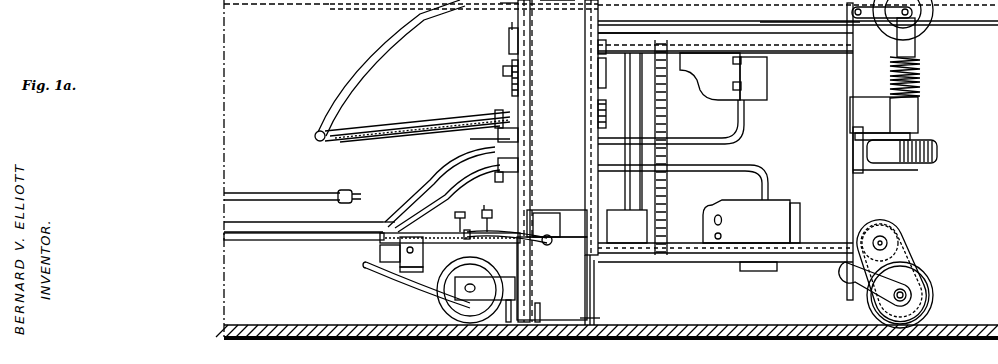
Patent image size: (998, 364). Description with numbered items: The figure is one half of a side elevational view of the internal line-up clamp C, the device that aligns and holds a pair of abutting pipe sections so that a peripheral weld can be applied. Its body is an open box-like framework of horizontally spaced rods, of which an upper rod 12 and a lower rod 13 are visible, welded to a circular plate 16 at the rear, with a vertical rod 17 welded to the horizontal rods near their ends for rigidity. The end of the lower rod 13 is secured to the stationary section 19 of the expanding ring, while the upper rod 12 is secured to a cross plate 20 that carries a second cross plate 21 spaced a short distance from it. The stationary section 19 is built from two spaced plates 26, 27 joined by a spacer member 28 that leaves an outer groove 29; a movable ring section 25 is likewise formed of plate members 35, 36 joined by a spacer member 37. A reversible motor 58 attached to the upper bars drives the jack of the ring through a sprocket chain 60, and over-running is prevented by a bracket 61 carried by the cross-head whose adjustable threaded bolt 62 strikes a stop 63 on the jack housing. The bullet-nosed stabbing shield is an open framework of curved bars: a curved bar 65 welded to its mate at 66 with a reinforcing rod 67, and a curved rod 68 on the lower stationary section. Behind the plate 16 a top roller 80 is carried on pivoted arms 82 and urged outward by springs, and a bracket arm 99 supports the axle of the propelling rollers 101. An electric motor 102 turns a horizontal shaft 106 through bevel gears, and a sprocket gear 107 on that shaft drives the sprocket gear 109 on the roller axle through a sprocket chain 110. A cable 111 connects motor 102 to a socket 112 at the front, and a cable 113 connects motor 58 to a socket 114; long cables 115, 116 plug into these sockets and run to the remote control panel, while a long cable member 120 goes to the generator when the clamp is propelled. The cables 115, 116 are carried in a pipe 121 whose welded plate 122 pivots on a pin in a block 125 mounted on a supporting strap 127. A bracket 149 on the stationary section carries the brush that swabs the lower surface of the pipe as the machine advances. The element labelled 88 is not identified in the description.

The horizontal rod 12 is at (801, 30).
The horizontal rod 13 is at (714, 262).
The circular plate 16 is at (853, 199).
The vertical rod 17 is at (627, 79).
The stationary section of expanding ring 19 is at (606, 293).
The cross plate 20 is at (590, 45).
The second cross plate 21 is at (514, 42).
The ring section 25 is at (557, 5).
The plate of stationary section 26 is at (526, 268).
The plate of stationary section 27 is at (596, 310).
The spacer member 28 is at (566, 291).
The outer groove 29 is at (598, 322).
The plate member 35 is at (510, 4).
The plate member 36 is at (608, 8).
The spacer member 37 is at (576, 25).
The motor 58 is at (764, 96).
The sprocket chain 60 is at (645, 158).
The bracket 61 is at (452, 157).
The threaded bolt 62 is at (492, 210).
The stop 63 is at (463, 210).
The curved bar 65 is at (362, 60).
The weld joint 66 is at (412, 112).
The reinforcing rod 67 is at (404, 135).
The curved rod 68 is at (370, 272).
The top roller 80 is at (935, 20).
The arms 82 is at (870, 18).
The roller 88 is at (930, 140).
The bracket arms 99 is at (862, 293).
The propelling rollers 101 is at (935, 288).
The electric motor 102 is at (770, 213).
The horizontal shaft 106 is at (884, 238).
The sprocket gear 107 is at (892, 241).
The sprocket gear 109 is at (917, 272).
The sprocket chain 110 is at (906, 260).
The cable 111 is at (700, 170).
The socket 112 is at (504, 164).
The cable 113 is at (742, 141).
The socket 114 is at (503, 135).
The long cable 115 is at (440, 206).
The long cable 116 is at (428, 178).
The long cable member 120 is at (236, 192).
The pipe 121 is at (236, 230).
The plate 122 is at (372, 240).
The block 125 is at (424, 251).
The supporting strap 127 is at (446, 249).
The bracket 149 is at (524, 318).
The internal line-up clamp C is at (507, 28).